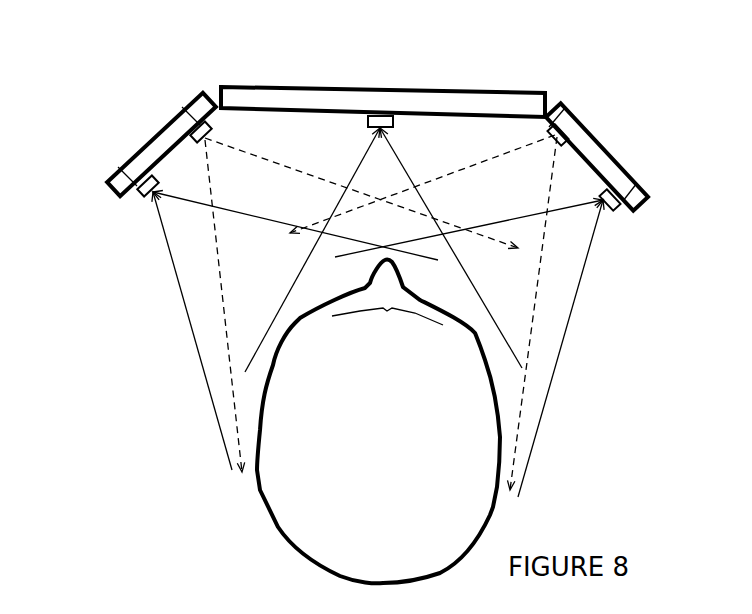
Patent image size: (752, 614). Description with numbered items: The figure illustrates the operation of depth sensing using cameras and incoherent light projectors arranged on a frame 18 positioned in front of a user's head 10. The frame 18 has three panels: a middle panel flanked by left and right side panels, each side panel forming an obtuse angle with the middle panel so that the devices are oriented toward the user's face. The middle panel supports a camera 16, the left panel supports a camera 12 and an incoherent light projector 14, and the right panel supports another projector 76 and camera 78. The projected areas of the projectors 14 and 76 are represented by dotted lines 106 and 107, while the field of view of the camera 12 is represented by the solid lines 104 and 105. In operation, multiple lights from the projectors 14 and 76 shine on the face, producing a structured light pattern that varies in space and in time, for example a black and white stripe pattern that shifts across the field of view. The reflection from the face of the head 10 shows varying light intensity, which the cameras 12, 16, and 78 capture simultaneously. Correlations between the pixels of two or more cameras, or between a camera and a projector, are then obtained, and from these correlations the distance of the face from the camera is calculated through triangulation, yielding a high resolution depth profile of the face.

The head 10 is at (277, 527).
The camera 12 is at (117, 172).
The incoherent light projector 14 is at (182, 112).
The camera 16 is at (387, 115).
The frame 18 is at (482, 92).
The incoherent light projector 76 is at (570, 135).
The camera 78 is at (640, 195).
The solid line 104 is at (167, 268).
The solid line 105 is at (245, 208).
The dotted line 106 is at (230, 397).
The dotted line 107 is at (295, 167).